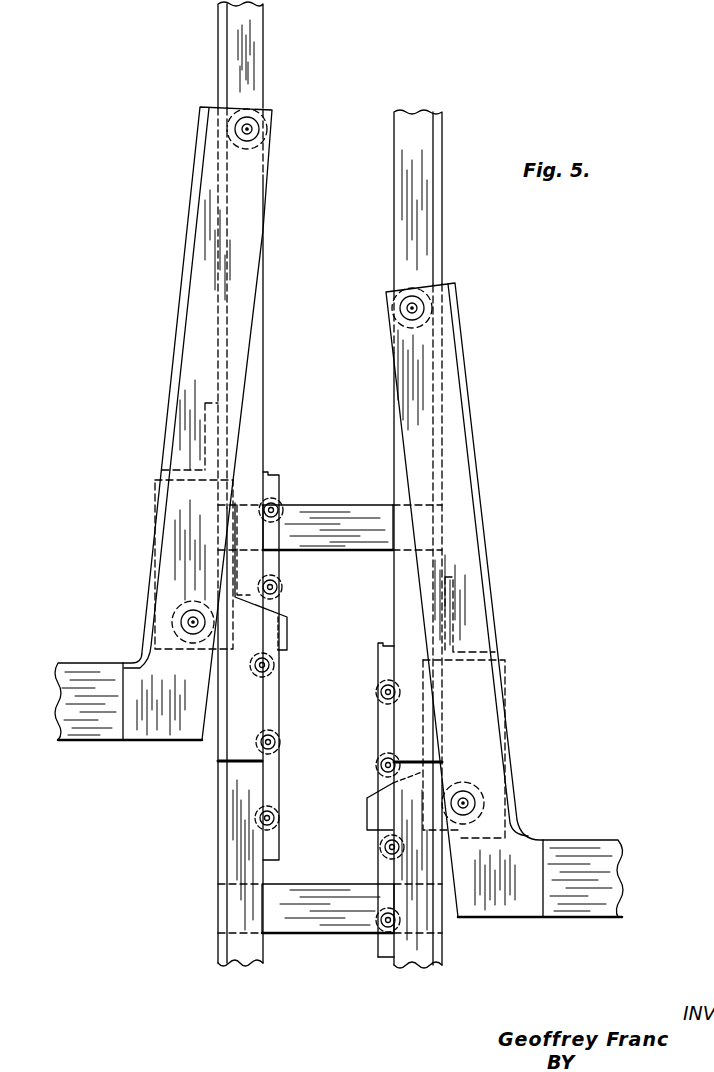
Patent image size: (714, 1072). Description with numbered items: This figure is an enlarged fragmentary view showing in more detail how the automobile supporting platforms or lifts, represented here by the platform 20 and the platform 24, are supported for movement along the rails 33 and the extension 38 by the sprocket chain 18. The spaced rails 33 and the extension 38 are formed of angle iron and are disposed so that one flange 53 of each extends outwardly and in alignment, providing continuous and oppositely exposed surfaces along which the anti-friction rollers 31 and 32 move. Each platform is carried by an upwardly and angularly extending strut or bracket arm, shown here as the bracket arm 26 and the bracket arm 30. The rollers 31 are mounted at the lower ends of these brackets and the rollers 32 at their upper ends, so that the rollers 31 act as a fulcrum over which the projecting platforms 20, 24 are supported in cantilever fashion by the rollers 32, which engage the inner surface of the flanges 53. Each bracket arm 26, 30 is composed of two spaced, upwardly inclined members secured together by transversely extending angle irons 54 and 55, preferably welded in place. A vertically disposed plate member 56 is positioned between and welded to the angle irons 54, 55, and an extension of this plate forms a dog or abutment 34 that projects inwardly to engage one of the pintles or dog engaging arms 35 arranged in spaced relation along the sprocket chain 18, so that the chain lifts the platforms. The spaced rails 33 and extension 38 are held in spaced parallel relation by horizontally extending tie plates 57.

The sprocket chain 18 is at (277, 712).
The automobile supporting platform or lift 20 is at (77, 666).
The automobile supporting platform or lift 24 is at (580, 841).
The strut or bracket arm 26 is at (203, 263).
The strut or bracket arm 30 is at (453, 373).
The roller 31 is at (213, 633).
The roller 32 is at (258, 110).
The rail or guide 33 is at (248, 82).
The dog or abutment 34 is at (291, 626).
The pintle or dog engaging arm 35 is at (380, 847).
The rail extension 38 is at (247, 960).
The flange 53 is at (235, 68).
The transversely extending angle iron 54 is at (205, 458).
The transversely extending angle iron 55 is at (156, 612).
The plate member 56 is at (178, 511).
The tie plate 57 is at (318, 506).